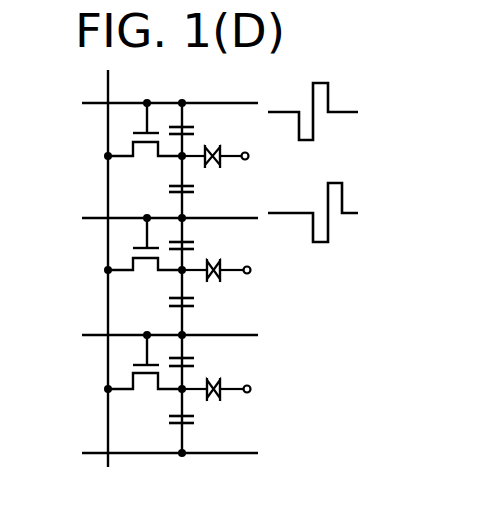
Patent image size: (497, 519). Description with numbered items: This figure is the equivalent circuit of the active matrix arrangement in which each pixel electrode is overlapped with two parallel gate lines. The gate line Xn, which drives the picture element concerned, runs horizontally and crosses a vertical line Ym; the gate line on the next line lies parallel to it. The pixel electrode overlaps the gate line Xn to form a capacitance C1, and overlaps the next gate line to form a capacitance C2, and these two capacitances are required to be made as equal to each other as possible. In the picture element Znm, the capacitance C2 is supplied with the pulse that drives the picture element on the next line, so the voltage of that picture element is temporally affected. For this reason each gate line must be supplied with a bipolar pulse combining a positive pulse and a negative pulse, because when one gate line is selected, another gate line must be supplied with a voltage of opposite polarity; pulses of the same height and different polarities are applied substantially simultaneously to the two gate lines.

The gate line Xn is at (188, 111).
The signal electrode line Y_m Ym is at (123, 291).
The capacitance C1 is at (202, 126).
The capacitance C2 is at (161, 185).
The picture element Znm is at (217, 175).